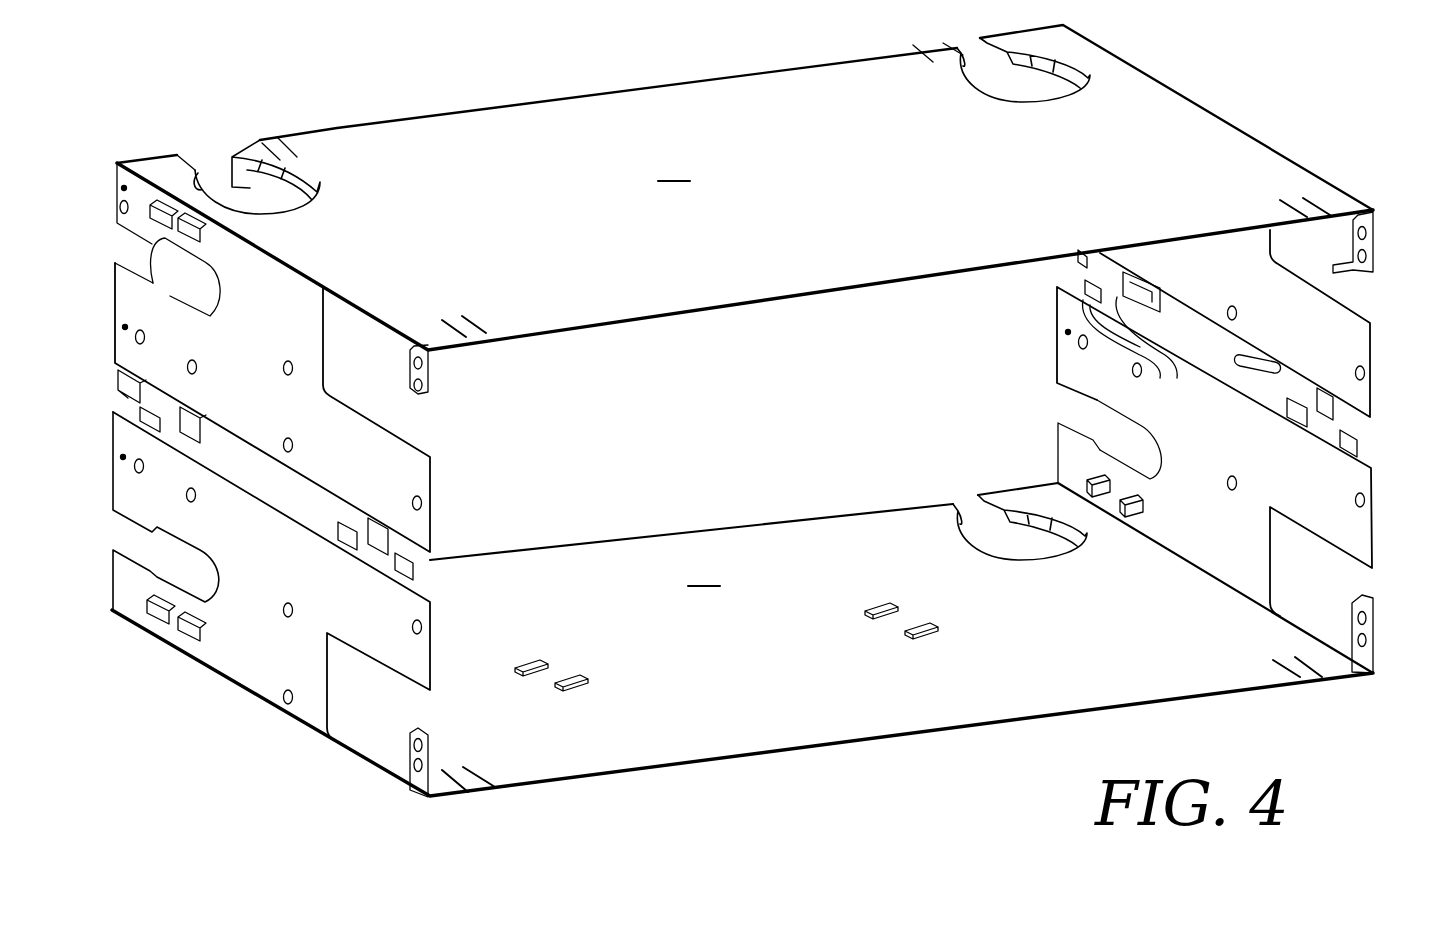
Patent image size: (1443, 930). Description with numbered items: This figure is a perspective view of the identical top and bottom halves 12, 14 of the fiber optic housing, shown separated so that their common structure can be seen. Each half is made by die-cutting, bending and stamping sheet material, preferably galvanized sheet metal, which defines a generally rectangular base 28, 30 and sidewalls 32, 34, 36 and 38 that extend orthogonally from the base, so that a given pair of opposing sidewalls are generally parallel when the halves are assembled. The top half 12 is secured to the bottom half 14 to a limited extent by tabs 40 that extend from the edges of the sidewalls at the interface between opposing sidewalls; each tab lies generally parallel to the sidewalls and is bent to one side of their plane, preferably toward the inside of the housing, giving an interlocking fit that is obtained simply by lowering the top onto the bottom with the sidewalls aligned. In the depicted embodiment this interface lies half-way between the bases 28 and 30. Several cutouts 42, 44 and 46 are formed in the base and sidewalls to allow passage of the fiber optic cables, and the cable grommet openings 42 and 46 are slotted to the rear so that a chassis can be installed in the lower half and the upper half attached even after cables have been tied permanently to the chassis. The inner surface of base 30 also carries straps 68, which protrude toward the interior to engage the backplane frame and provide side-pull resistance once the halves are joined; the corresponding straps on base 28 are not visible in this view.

The top half 12 is at (447, 160).
The bottom half 14 is at (762, 760).
The base 28 is at (674, 168).
The base 30 is at (704, 573).
The sidewall 32 is at (112, 180).
The sidewall 34 is at (1345, 322).
The sidewall 36 is at (132, 495).
The sidewall 38 is at (1345, 465).
The tabs 40 is at (132, 436).
The cable grommet openings 42 is at (280, 195).
The cutouts 44 is at (1343, 305).
The cable grommet openings 46 is at (157, 240).
The straps 68 is at (595, 680).